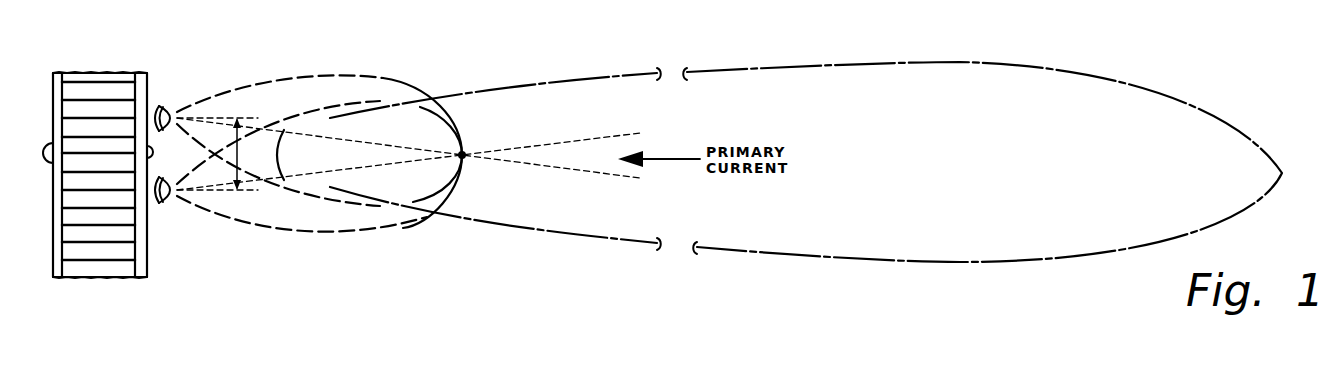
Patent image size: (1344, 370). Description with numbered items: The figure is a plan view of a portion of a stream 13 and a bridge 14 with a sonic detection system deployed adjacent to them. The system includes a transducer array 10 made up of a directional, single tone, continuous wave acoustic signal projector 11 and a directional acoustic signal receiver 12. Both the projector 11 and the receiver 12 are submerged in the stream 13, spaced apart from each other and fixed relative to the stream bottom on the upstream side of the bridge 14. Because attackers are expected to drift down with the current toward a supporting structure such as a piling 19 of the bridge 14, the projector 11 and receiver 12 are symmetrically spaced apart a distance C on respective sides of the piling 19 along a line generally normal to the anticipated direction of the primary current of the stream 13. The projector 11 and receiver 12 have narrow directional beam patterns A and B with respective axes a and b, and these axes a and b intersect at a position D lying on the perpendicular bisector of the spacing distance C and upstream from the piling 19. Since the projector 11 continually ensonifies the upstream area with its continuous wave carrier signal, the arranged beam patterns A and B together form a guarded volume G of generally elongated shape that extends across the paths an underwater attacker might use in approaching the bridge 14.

The transducer array 10 is at (165, 256).
The acoustic signal projector 11 is at (169, 100).
The acoustic signal receiver 12 is at (176, 210).
The stream 13 is at (443, 247).
The bridge 14 is at (117, 68).
The piling 19 is at (153, 152).
The projector beam pattern A is at (307, 78).
The receiver beam pattern B is at (334, 108).
The spacing distance C is at (237, 154).
The intersection position D is at (465, 154).
The guarded volume G is at (698, 72).
The projector beam axis a is at (360, 142).
The receiver beam axis b is at (360, 170).